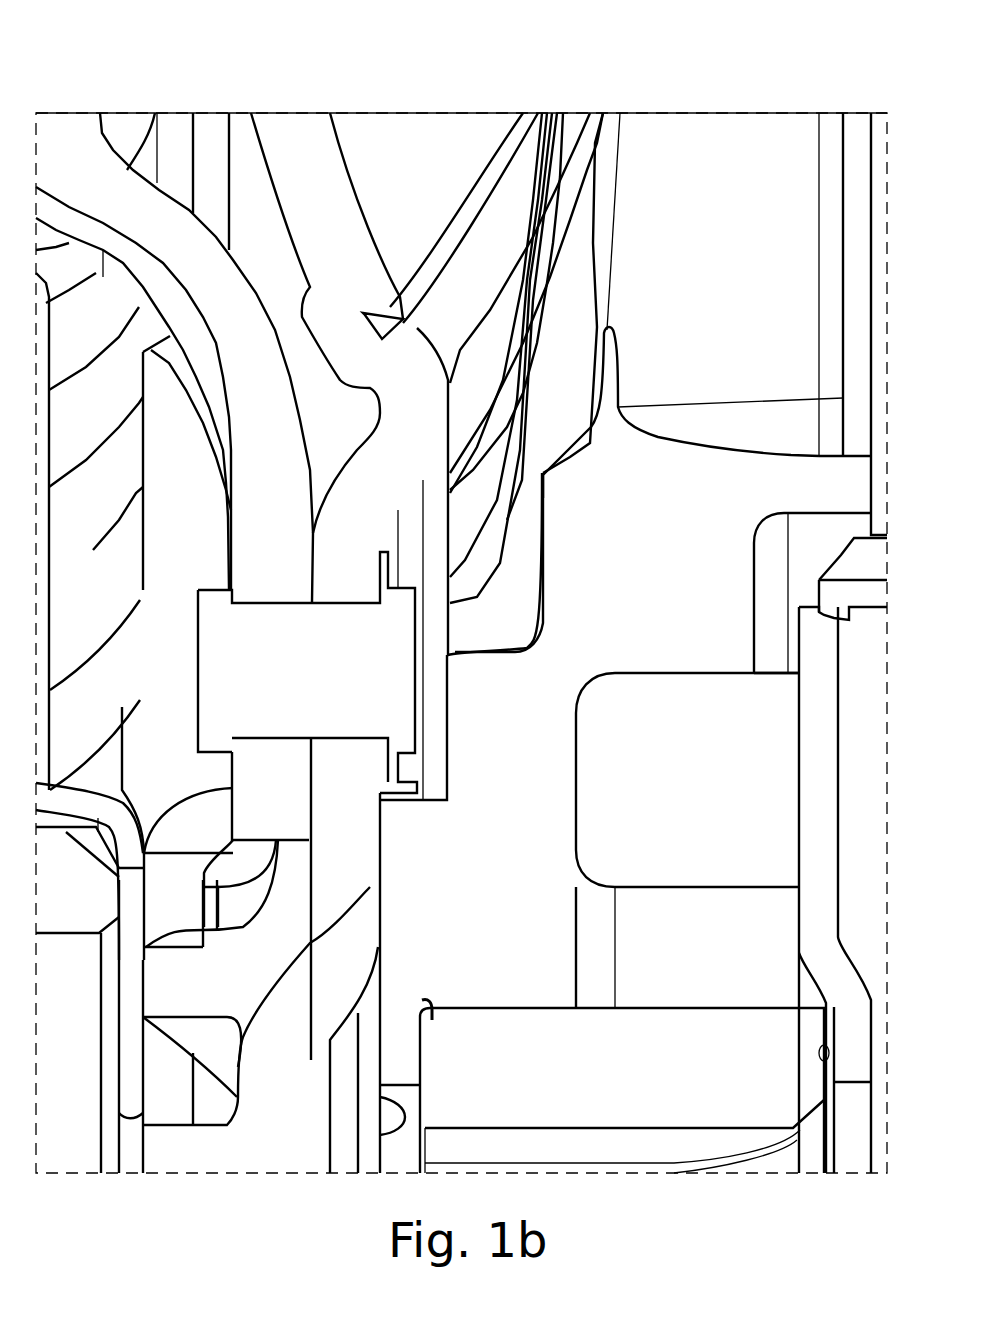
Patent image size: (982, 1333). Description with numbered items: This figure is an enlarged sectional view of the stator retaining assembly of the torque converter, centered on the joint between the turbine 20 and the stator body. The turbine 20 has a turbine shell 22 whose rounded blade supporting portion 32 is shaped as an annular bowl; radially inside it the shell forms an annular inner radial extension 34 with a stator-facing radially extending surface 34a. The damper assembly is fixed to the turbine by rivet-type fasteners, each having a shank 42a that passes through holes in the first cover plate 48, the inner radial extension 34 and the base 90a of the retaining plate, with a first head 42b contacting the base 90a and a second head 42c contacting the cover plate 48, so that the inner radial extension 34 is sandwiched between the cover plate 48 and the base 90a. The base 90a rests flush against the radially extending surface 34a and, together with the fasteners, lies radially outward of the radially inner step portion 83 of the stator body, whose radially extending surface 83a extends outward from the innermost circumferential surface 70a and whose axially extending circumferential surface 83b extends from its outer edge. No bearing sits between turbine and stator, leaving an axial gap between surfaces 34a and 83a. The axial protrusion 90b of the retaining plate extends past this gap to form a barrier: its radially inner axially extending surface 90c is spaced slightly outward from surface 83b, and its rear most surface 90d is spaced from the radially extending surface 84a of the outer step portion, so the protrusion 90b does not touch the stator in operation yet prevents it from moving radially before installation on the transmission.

The turbine 20 is at (443, 94).
The turbine shell 22 is at (281, 104).
The rounded blade supporting portion 32 is at (326, 201).
The inner radial extension 34 is at (320, 893).
The radially extending surface 34a is at (310, 947).
The shank 42a is at (317, 647).
The first head 42b is at (397, 637).
The second head 42c is at (220, 690).
The first cover plate 48 is at (247, 507).
The innermost circumferential surface 70a is at (397, 1083).
The radially inner step portion 83 is at (438, 912).
The radially extending surface 83a is at (377, 938).
The axially extending circumferential surface 83b is at (407, 800).
The radially extending surface 84a is at (447, 780).
The base 90a is at (383, 763).
The axial protrusion 90b is at (405, 793).
The radially inner axially extending surface 90c is at (383, 803).
The rear most surface 90d is at (400, 785).